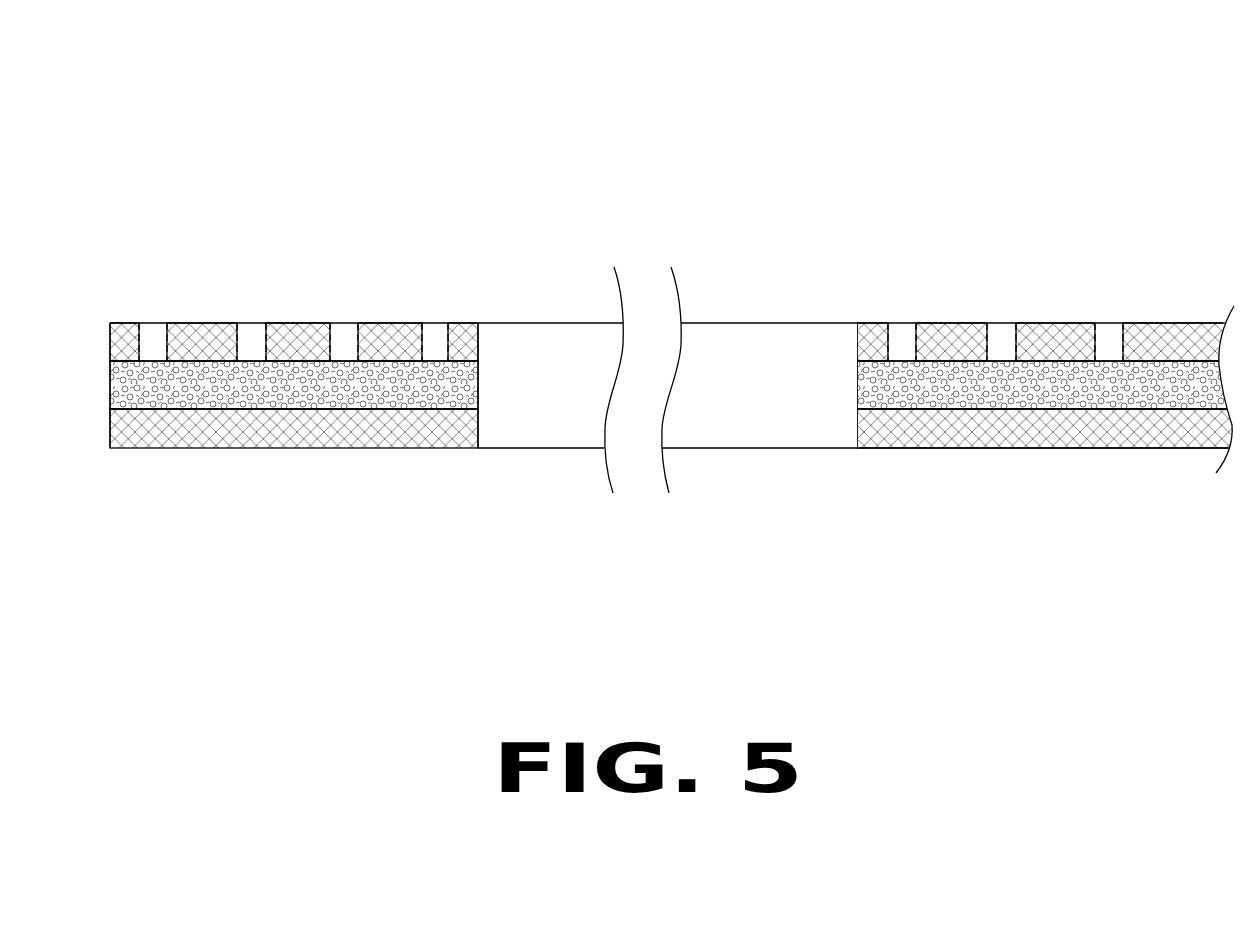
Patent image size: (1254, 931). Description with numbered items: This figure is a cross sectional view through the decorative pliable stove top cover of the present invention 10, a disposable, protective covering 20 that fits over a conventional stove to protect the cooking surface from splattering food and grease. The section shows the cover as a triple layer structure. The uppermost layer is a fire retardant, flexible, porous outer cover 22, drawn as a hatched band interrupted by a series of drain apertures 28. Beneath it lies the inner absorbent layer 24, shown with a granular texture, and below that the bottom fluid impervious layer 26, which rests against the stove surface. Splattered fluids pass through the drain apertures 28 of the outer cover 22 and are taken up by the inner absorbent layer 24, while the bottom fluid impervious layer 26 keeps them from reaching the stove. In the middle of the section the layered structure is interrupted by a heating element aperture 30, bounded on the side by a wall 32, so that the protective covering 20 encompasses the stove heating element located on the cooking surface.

The stove top cover 10 is at (878, 150).
The protective covering 20 is at (953, 323).
The outer cover 22 is at (400, 325).
The inner absorbent layer 24 is at (1010, 387).
The bottom fluid impervious layer 26 is at (225, 430).
The drain apertures 28 is at (157, 330).
The heating element apertures 30 is at (748, 352).
The wall 32 is at (478, 348).